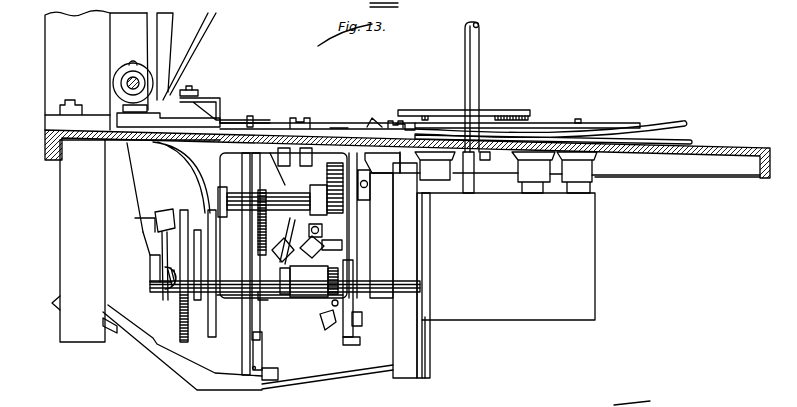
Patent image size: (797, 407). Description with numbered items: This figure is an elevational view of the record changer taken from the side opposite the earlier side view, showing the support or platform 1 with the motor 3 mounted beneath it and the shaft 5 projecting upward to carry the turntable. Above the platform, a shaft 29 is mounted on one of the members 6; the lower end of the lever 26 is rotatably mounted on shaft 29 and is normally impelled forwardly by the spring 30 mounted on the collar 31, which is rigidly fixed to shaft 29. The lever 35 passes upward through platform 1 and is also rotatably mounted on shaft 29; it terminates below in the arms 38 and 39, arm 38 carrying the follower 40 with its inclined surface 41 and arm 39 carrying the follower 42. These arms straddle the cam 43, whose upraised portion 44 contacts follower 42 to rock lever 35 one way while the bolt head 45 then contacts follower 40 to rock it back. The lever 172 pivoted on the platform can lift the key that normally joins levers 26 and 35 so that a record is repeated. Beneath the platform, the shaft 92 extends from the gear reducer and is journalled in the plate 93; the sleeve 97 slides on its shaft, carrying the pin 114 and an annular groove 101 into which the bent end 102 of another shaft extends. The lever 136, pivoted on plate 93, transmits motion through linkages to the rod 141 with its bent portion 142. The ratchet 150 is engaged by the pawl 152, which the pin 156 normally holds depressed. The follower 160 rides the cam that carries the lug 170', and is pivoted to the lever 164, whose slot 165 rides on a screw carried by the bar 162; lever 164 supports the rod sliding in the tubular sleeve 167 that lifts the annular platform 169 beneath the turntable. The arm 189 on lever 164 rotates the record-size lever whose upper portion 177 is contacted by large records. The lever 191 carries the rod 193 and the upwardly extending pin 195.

The support or platform 1 is at (752, 151).
The motor 3 is at (585, 245).
The shaft 5 is at (464, 46).
The members 6 is at (50, 14).
The lever 26 is at (118, 41).
The shaft 29 is at (116, 75).
The spring 30 is at (145, 39).
The collar 31 is at (128, 85).
The lever 35 is at (150, 164).
The arm 38 is at (140, 233).
The arm 39 is at (205, 212).
The follower 40 is at (149, 262).
The inclined surface 41 is at (153, 240).
The follower 42 is at (198, 214).
The cam 43 is at (179, 315).
The upraised portion 44 is at (190, 268).
The bolt head 45 is at (163, 289).
The shaft 92 is at (421, 287).
The plate 93 is at (357, 312).
The sleeve 97 is at (262, 292).
The annular groove 101 is at (287, 338).
The bent end 102 is at (294, 262).
The pin 114 is at (330, 255).
The lever 136 is at (360, 225).
The rod 141 is at (332, 303).
The bent portion 142 is at (328, 324).
The ratchet 150 is at (315, 198).
The pawl 152 is at (304, 148).
The pin 156 is at (333, 128).
The follower 160 is at (265, 381).
The bar 162 is at (62, 256).
The lever 164 is at (326, 385).
The slot 165 is at (112, 334).
The tubular sleeve 167 is at (431, 357).
The platform 169 is at (497, 112).
The lug 170' is at (317, 129).
The lever 172 is at (616, 127).
The portion of lever 177 is at (217, 21).
The arm 189 is at (212, 357).
The lever 191 is at (687, 137).
The rod 193 is at (186, 95).
The pin 195 is at (578, 119).